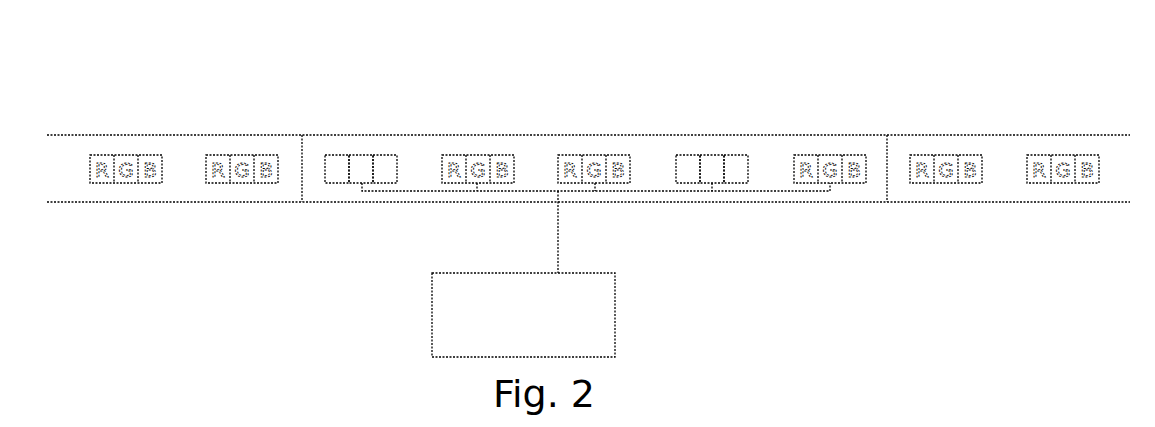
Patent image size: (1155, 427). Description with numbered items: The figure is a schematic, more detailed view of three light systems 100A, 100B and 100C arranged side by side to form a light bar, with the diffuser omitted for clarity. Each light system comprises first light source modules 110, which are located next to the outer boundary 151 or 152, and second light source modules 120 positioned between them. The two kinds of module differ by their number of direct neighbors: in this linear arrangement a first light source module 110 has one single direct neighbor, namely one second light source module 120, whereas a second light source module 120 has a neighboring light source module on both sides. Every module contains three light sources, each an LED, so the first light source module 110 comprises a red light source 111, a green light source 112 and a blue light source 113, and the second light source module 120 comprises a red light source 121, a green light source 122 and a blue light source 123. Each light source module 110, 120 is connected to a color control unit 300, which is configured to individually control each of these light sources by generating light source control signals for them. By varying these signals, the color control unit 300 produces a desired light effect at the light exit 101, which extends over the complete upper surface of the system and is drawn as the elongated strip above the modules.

The light system 100A is at (115, 78).
The light system 100B is at (572, 146).
The light system 100C is at (1058, 115).
The light exit 101 is at (500, 135).
The first light source module 110 is at (572, 166).
The red light source 111 is at (338, 155).
The green light source 112 is at (363, 155).
The blue light source 113 is at (382, 155).
The second light source module 120 is at (609, 167).
The red light source 121 is at (687, 155).
The green light source 122 is at (708, 155).
The blue light source 123 is at (735, 155).
The outer boundary 151 is at (887, 150).
The outer boundary 152 is at (302, 135).
The color control unit 300 is at (615, 306).